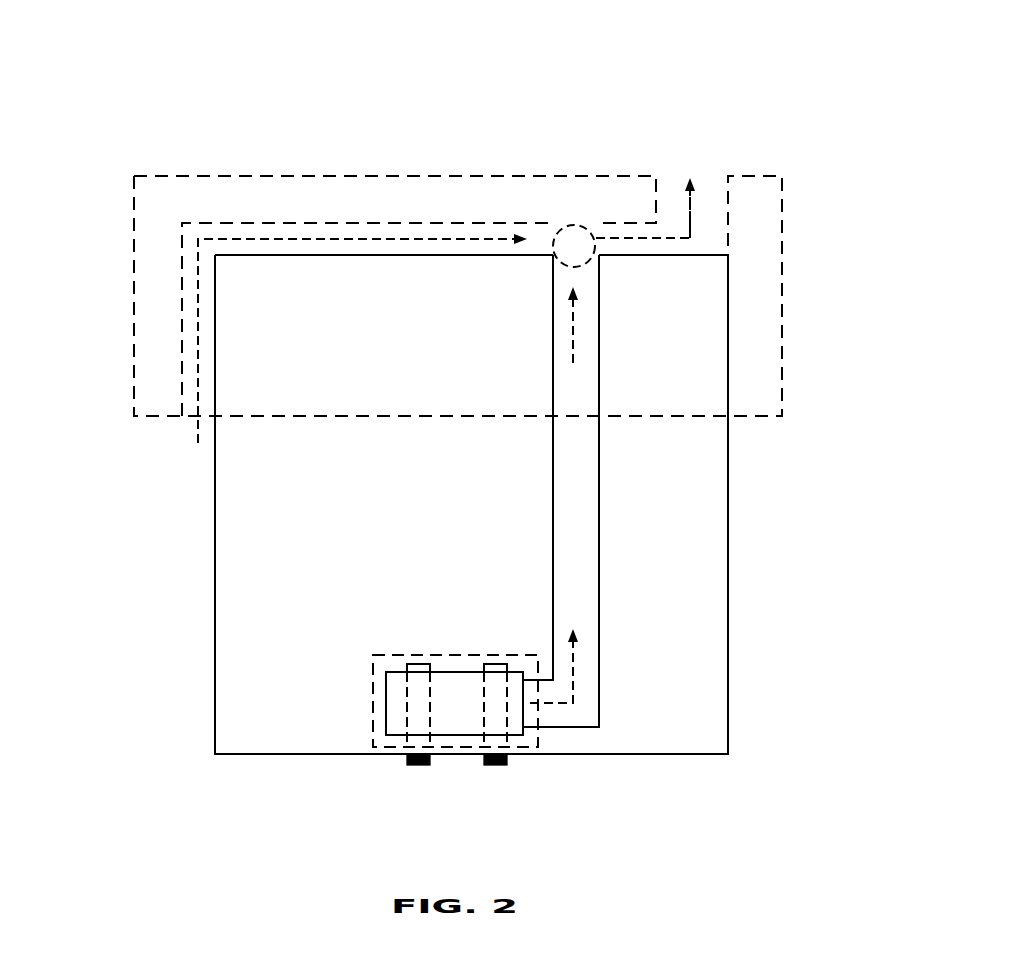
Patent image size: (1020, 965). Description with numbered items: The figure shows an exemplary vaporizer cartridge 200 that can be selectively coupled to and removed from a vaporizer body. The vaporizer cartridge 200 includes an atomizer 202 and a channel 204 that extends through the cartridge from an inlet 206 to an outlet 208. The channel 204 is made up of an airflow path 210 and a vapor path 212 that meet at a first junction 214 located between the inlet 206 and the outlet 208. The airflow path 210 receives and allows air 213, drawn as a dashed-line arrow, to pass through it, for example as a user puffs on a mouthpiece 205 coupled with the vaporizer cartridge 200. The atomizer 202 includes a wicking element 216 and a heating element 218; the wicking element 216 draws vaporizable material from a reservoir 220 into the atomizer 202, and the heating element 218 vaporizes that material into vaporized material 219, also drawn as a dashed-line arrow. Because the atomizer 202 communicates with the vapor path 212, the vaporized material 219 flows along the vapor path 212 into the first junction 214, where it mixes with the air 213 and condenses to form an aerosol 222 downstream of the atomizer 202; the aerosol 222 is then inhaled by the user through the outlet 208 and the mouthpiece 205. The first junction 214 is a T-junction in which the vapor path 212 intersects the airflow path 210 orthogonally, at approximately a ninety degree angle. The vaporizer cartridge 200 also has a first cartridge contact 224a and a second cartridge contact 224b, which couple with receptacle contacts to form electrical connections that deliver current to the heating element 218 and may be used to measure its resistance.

The vaporizer cartridge 200 is at (773, 63).
The atomizer 202 is at (372, 673).
The channel 204 is at (426, 257).
The mouthpiece 205 is at (134, 213).
The inlet 206 is at (186, 423).
The outlet 208 is at (720, 171).
The airflow path 210 is at (446, 310).
The vapor path 212 is at (561, 491).
The air 213 is at (196, 318).
The first junction 214 is at (596, 228).
The wicking element 216 is at (460, 715).
The heating element 218 is at (419, 663).
The vaporized material 219 is at (560, 323).
The reservoir 220 is at (471, 504).
The aerosol 222 is at (692, 222).
The first cartridge contact 224a is at (407, 767).
The second cartridge contact 224b is at (502, 767).